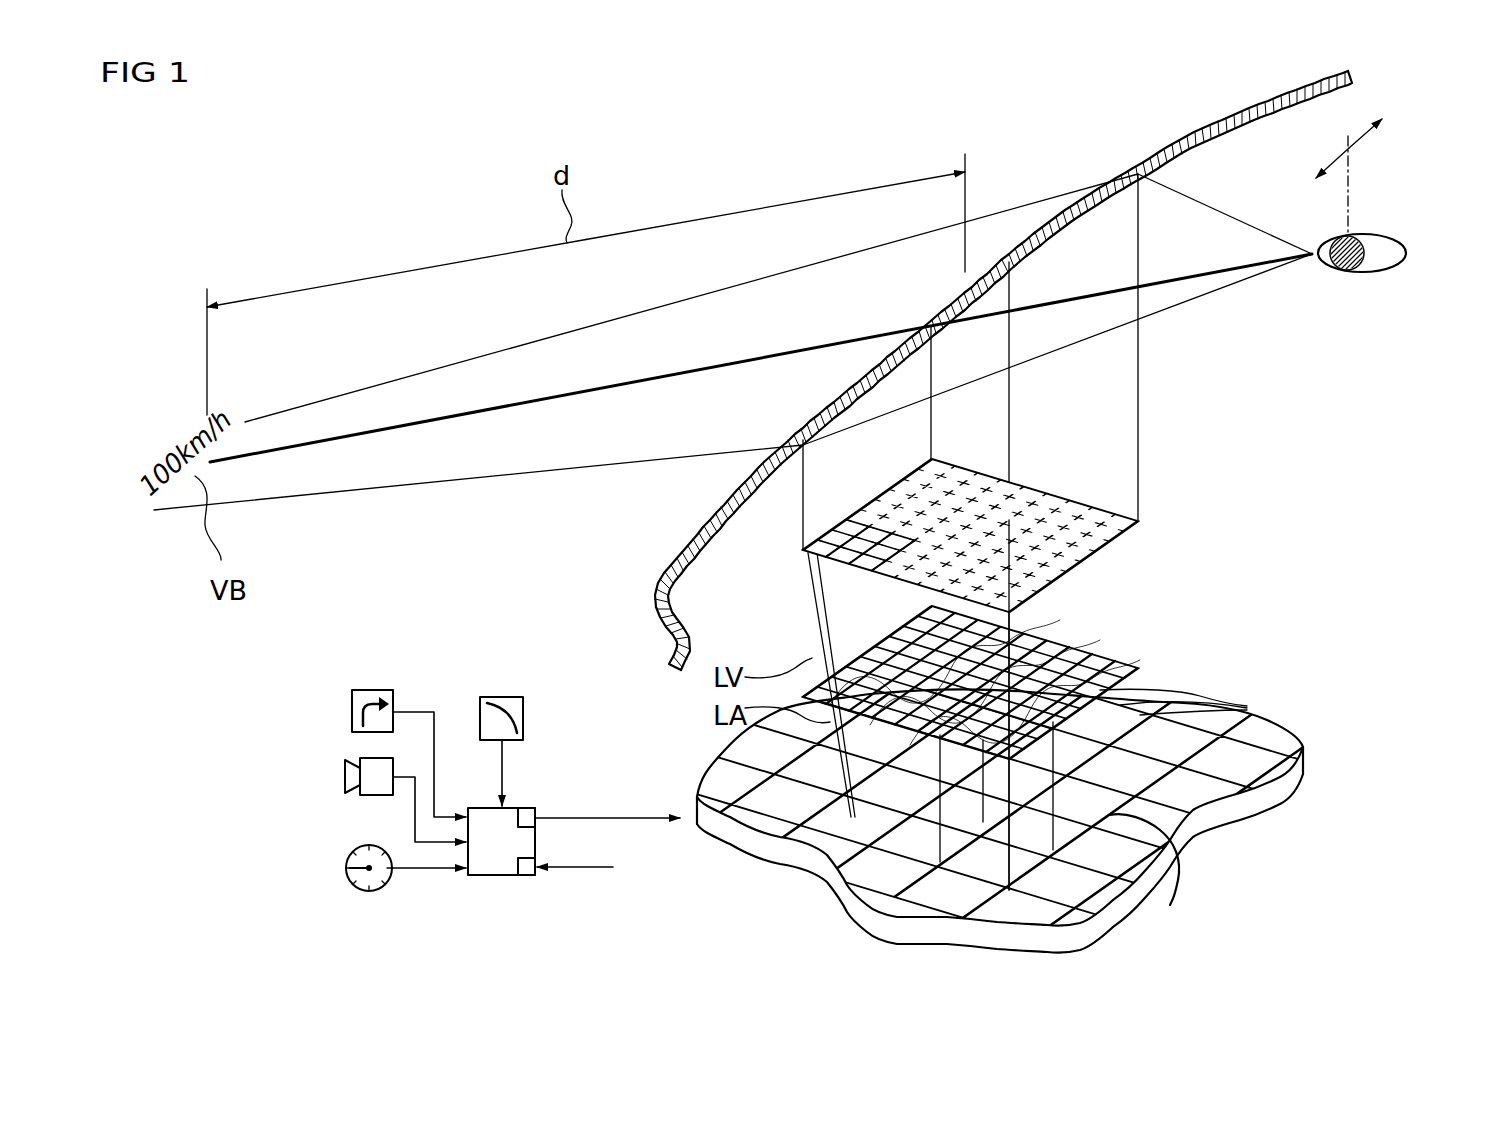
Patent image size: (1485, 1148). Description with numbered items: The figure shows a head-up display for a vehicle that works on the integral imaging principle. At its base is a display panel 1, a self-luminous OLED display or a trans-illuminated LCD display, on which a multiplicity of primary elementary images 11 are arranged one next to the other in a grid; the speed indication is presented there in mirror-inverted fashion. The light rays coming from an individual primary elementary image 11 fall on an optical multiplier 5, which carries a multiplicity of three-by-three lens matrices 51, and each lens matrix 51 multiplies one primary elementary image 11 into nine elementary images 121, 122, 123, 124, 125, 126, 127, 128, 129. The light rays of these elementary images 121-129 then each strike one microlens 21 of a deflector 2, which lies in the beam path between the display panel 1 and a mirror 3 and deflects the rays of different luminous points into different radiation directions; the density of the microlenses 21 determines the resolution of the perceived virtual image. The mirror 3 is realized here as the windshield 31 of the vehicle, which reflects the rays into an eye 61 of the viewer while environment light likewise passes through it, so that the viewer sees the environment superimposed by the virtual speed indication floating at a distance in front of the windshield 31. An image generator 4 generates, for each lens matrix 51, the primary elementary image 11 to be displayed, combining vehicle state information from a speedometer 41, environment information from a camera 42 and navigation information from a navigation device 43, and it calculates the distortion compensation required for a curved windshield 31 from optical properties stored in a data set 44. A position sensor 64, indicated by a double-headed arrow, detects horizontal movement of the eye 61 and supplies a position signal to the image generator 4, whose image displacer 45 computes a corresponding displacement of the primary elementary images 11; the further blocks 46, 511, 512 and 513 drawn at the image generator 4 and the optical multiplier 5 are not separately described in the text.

The display panel 1 is at (1035, 780).
The primary elementary image 11 is at (1143, 778).
The deflector 2 is at (1031, 532).
The microlens 21 is at (1098, 515).
The mirror 3 is at (966, 370).
The windshield 31 is at (697, 543).
The image generator 4 is at (574, 858).
The speed sensor 41 is at (347, 862).
The camera 42 is at (345, 770).
The navigation device 43 is at (352, 708).
The data set 44 is at (524, 716).
The image displacer 45 is at (523, 877).
The output interface 46 is at (525, 807).
The optical multiplier 5 is at (1043, 658).
The lens matrix 51 is at (1057, 682).
The first grid line 511 is at (1069, 647).
The second grid line 512 is at (1092, 654).
The third grid line 513 is at (1115, 661).
The eye 61 is at (1398, 270).
The position sensor 64 is at (1378, 143).
The elementary image 121 is at (819, 600).
The elementary image 122 is at (819, 600).
The elementary image 123 is at (819, 600).
The elementary image 124 is at (819, 600).
The elementary image 125 is at (819, 600).
The elementary image 126 is at (819, 600).
The elementary image 127 is at (819, 600).
The elementary image 128 is at (819, 600).
The elementary image 129 is at (790, 622).